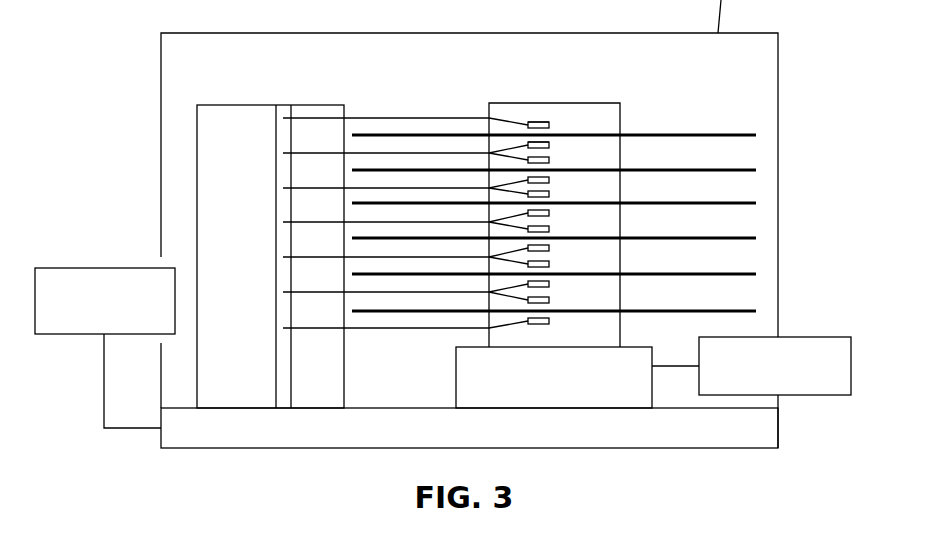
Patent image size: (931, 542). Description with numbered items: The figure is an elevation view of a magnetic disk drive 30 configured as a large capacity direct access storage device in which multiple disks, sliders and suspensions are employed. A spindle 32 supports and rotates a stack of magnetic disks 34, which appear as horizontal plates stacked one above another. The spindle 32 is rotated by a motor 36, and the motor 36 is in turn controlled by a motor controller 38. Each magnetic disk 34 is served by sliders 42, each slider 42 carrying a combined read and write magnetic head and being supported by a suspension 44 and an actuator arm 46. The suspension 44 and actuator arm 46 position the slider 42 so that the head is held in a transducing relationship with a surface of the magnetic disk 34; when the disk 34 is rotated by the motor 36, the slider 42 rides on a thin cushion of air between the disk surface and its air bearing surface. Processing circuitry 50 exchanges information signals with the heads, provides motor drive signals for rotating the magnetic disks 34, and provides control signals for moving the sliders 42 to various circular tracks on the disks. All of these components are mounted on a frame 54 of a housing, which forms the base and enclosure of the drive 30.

The magnetic disk drive 30 is at (674, 101).
The spindle 32 is at (609, 103).
The magnetic disk 34 is at (757, 136).
The motor 36 is at (542, 388).
The motor controller 38 is at (810, 396).
The slider 42 is at (552, 138).
The suspension 44 is at (518, 122).
The actuator arm 46 is at (460, 153).
The processing circuitry 50 is at (76, 268).
The frame 54 is at (212, 448).